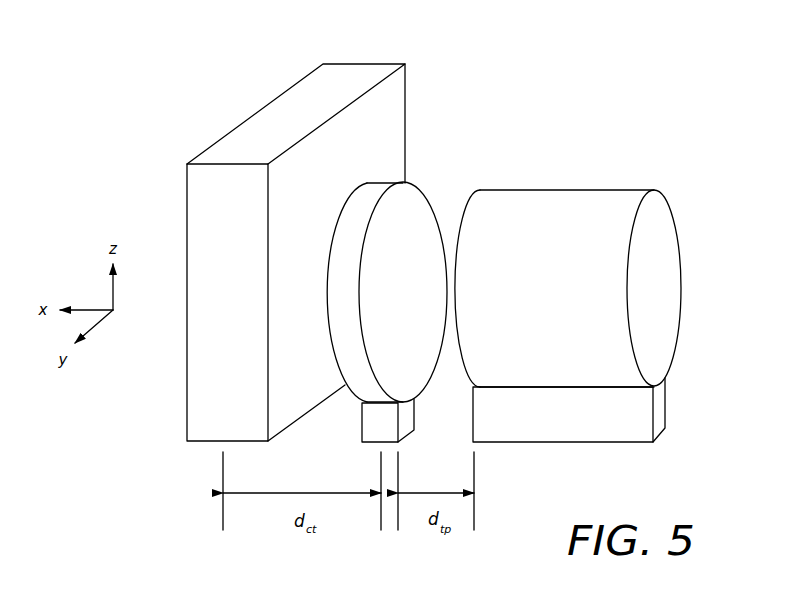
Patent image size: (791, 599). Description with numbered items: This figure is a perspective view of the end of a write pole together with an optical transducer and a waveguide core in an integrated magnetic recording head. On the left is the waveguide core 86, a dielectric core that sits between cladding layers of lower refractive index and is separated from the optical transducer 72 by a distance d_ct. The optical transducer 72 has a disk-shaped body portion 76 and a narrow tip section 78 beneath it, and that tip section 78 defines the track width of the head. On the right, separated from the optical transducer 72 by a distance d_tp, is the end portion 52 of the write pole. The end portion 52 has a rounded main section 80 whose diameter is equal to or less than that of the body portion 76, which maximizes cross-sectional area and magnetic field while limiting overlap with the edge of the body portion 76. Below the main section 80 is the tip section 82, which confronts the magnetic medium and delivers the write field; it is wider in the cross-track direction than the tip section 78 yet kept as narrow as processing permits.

The end portion 52 is at (613, 187).
The optical transducer 72 is at (422, 169).
The body portion 76 is at (420, 225).
The tip section 78 is at (378, 428).
The main section 80 is at (662, 277).
The tip section 82 is at (657, 413).
The waveguide core 86 is at (380, 63).